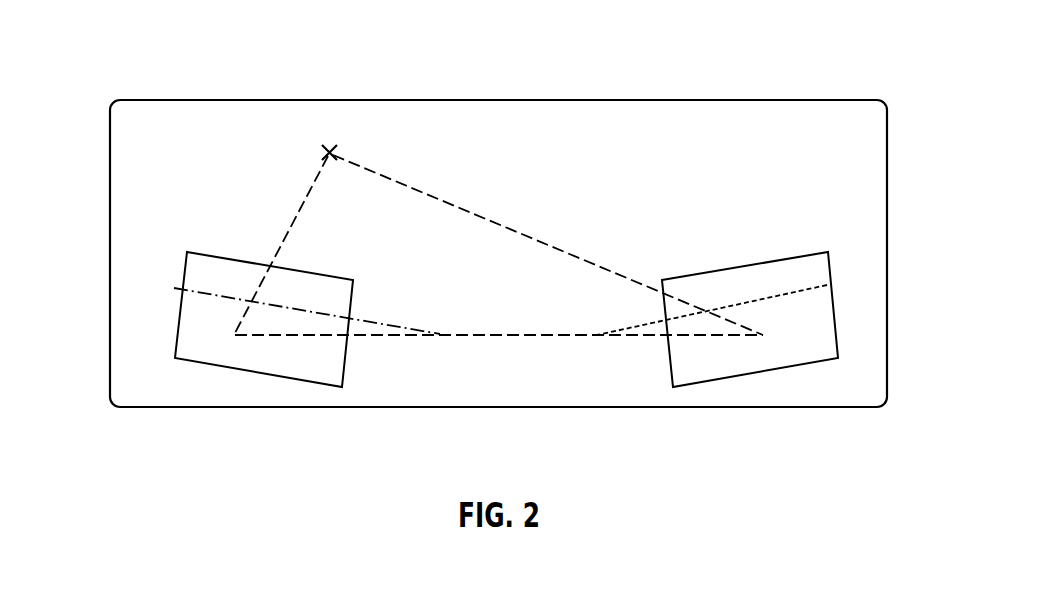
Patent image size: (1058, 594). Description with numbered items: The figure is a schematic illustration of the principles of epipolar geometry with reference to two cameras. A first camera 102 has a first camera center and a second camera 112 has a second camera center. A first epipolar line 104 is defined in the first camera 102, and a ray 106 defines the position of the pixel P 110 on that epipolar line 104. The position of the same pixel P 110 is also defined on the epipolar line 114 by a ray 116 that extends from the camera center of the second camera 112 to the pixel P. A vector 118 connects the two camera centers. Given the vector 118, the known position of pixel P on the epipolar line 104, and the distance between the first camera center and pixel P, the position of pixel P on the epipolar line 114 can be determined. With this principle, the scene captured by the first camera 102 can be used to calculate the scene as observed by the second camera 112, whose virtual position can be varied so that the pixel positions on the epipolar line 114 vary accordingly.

The first camera 102 is at (257, 373).
The first epipolar line 104 is at (218, 293).
The ray 106 is at (292, 225).
The pixel P 110 is at (331, 145).
The second camera 112 is at (750, 375).
The epipolar line 114 is at (808, 283).
The ray 116 is at (548, 242).
The vector 118 is at (503, 335).